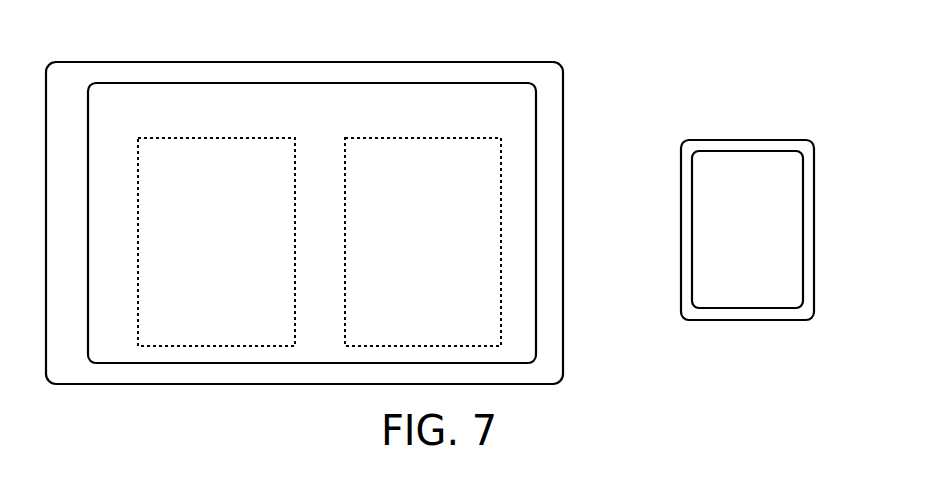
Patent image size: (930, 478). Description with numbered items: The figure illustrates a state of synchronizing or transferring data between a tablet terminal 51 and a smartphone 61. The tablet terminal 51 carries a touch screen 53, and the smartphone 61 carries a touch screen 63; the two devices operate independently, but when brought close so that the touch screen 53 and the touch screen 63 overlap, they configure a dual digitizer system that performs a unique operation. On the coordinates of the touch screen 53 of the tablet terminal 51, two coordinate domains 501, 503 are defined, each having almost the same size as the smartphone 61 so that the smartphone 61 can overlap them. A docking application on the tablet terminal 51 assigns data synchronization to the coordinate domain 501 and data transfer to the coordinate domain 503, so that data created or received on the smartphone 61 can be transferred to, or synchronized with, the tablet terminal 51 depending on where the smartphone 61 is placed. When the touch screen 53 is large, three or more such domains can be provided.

The tablet terminal 51 is at (527, 62).
The touch screen 53 is at (325, 83).
The coordinate domain 501 is at (430, 138).
The coordinate domain 503 is at (224, 138).
The smartphone 61 is at (800, 140).
The touch screen 63 is at (735, 151).